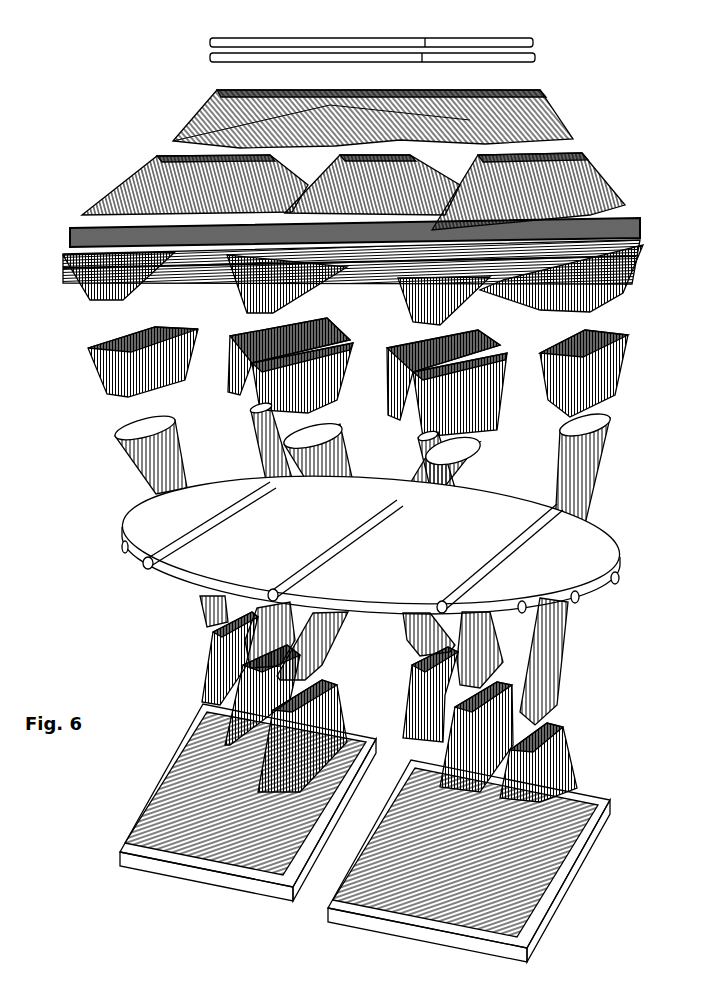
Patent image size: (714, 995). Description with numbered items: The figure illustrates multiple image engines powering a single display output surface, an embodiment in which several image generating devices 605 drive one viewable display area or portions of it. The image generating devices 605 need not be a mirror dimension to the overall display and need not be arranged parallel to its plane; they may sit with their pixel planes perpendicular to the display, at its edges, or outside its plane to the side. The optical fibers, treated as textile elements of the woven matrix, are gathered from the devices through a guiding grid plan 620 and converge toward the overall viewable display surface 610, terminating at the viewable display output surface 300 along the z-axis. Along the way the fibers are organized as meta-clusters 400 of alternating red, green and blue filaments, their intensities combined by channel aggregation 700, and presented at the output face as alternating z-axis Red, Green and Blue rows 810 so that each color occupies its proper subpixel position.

The viewable display output surface 300 is at (533, 43).
The z-axis Red, Green and Blue rows 810 is at (573, 137).
The channel aggregation 700 is at (627, 275).
The overall viewable display surface 610 is at (620, 372).
The guiding grid plan 620 is at (118, 530).
The meta-cluster 400 is at (567, 852).
The image generating devices 605 is at (528, 940).